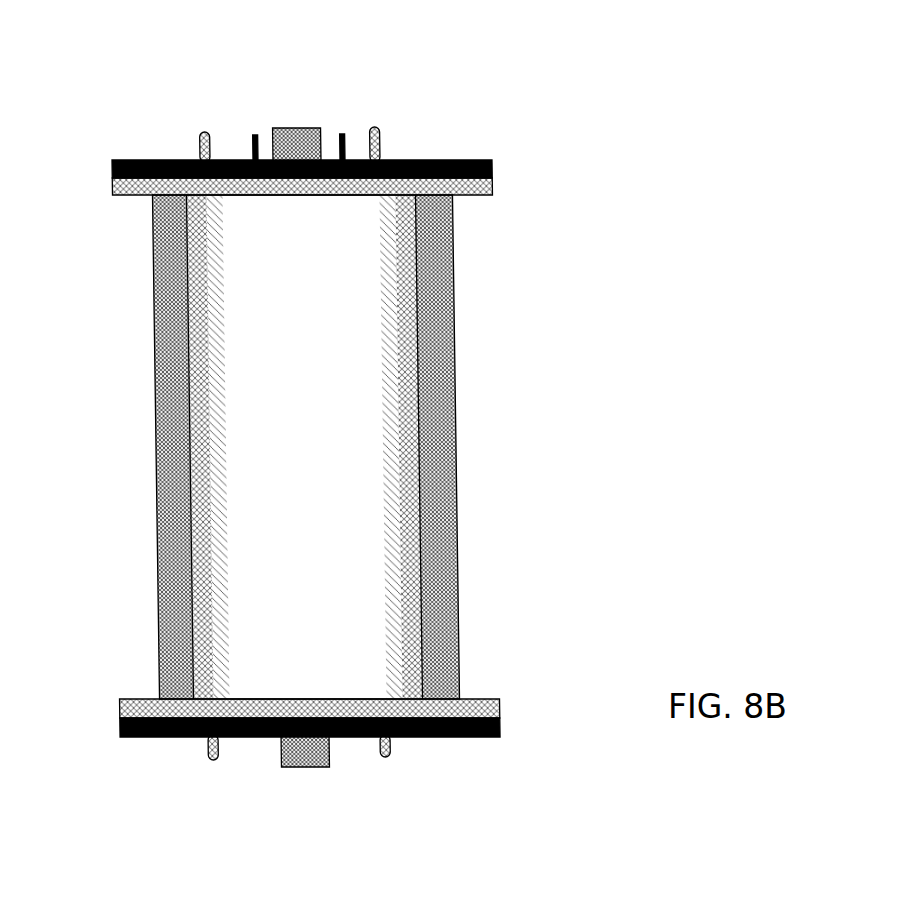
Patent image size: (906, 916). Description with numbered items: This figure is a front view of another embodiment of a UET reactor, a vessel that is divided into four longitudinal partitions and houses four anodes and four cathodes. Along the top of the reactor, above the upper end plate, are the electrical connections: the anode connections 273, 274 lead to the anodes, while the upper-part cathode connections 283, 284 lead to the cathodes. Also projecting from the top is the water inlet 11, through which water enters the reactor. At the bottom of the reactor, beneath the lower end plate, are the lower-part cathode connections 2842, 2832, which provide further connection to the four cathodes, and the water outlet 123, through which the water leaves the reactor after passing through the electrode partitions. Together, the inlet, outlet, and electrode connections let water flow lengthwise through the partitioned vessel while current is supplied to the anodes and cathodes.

The water inlet 11 is at (303, 122).
The water outlet 123 is at (302, 775).
The anode connection 273 is at (342, 130).
The anode connection 274 is at (255, 128).
The cathode connection (upper part) 283 is at (378, 127).
The cathode connection (upper part) 284 is at (205, 128).
The cathode connection (lower part) 2832 is at (390, 760).
The cathode connection (lower part) 2842 is at (208, 762).